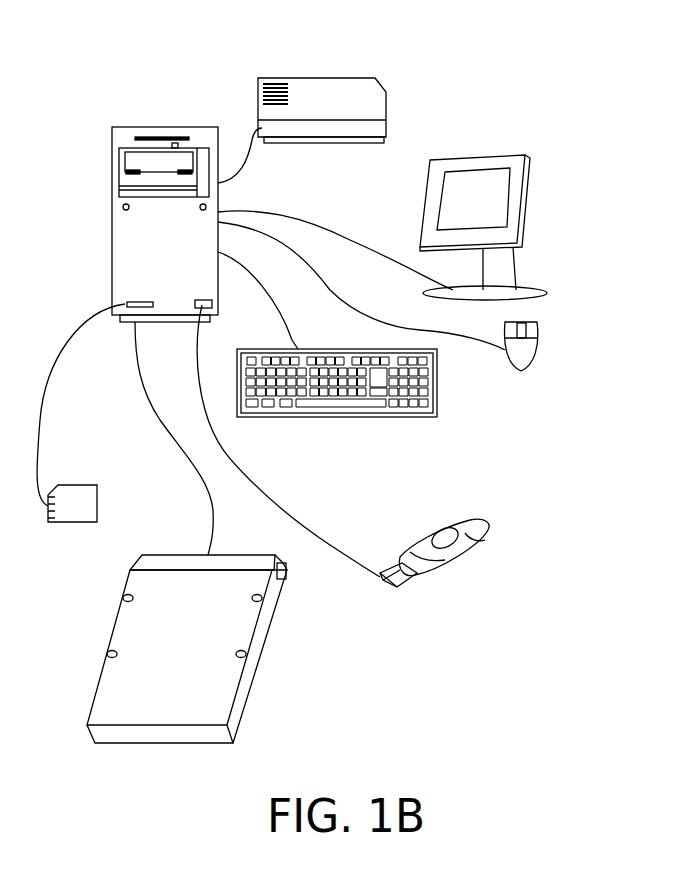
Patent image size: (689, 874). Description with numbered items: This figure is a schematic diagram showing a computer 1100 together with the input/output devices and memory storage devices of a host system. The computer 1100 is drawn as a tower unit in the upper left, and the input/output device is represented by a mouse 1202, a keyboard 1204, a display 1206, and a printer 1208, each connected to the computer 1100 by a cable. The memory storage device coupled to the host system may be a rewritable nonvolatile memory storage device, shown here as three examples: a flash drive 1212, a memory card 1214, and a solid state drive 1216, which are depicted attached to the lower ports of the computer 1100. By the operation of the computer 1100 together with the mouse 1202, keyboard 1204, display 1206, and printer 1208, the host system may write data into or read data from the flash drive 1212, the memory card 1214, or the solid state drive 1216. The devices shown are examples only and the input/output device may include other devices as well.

The computer 1100 is at (165, 127).
The mouse 1202 is at (537, 348).
The keyboard 1204 is at (437, 393).
The display 1206 is at (485, 156).
The printer 1208 is at (318, 78).
The flash drive 1212 is at (427, 538).
The memory card 1214 is at (97, 494).
The solid state drive (SSD) 1216 is at (233, 546).